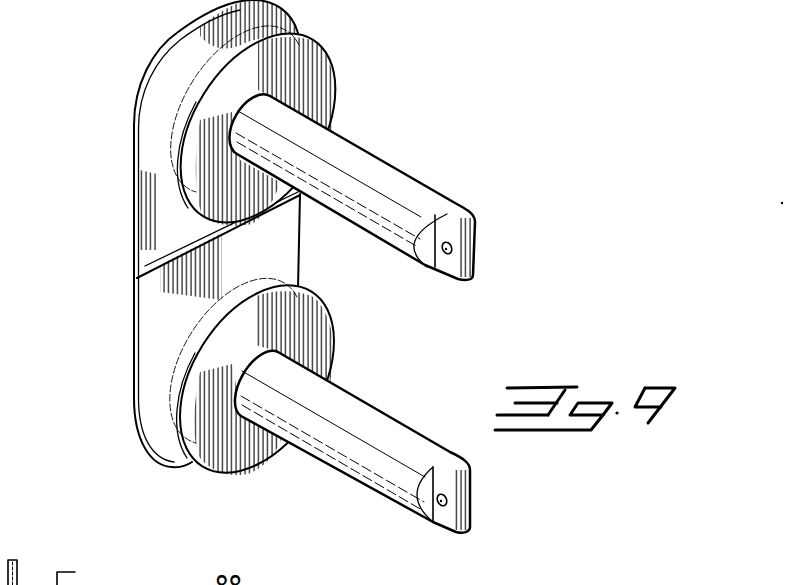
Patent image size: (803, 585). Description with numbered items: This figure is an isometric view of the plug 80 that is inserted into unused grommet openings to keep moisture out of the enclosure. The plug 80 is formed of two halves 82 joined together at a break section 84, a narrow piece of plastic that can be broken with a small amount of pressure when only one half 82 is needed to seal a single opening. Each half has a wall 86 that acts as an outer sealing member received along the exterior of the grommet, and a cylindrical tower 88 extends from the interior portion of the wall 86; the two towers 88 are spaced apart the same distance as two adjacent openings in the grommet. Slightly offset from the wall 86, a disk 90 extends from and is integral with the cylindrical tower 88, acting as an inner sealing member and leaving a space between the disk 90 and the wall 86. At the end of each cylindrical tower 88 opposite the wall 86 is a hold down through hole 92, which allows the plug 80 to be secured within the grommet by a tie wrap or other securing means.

The plug 80 is at (137, 158).
The half of the plug 82 is at (175, 52).
The break section 84 is at (153, 277).
The wall 86 is at (168, 215).
The cylindrical tower 88 is at (397, 178).
The disk 90 is at (317, 68).
The hold down through hole 92 is at (447, 255).